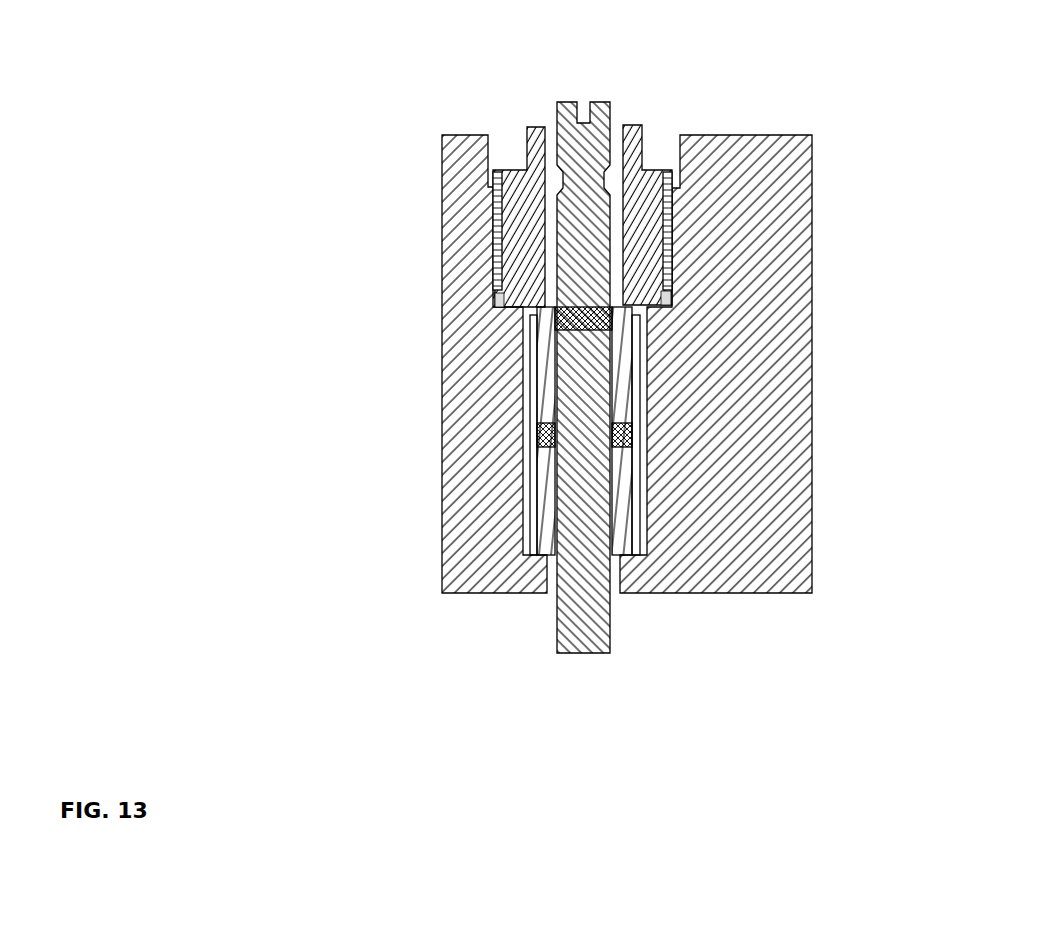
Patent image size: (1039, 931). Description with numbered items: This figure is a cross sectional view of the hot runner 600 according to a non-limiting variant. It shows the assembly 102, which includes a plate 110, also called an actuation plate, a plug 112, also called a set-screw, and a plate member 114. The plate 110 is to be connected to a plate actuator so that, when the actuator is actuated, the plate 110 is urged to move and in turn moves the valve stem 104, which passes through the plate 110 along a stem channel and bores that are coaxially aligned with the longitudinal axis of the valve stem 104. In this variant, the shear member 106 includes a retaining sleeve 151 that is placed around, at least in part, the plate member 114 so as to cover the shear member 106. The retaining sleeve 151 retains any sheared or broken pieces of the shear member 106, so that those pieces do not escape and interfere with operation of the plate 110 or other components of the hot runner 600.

The hot runner 600 is at (586, 63).
The assembly 102 is at (912, 171).
The plate 110 is at (812, 248).
The plug 112 is at (523, 227).
The plate member 114 is at (620, 392).
The shear member 106 is at (632, 435).
The retaining sleeve 151 is at (530, 387).
The valve stem 104 is at (610, 647).